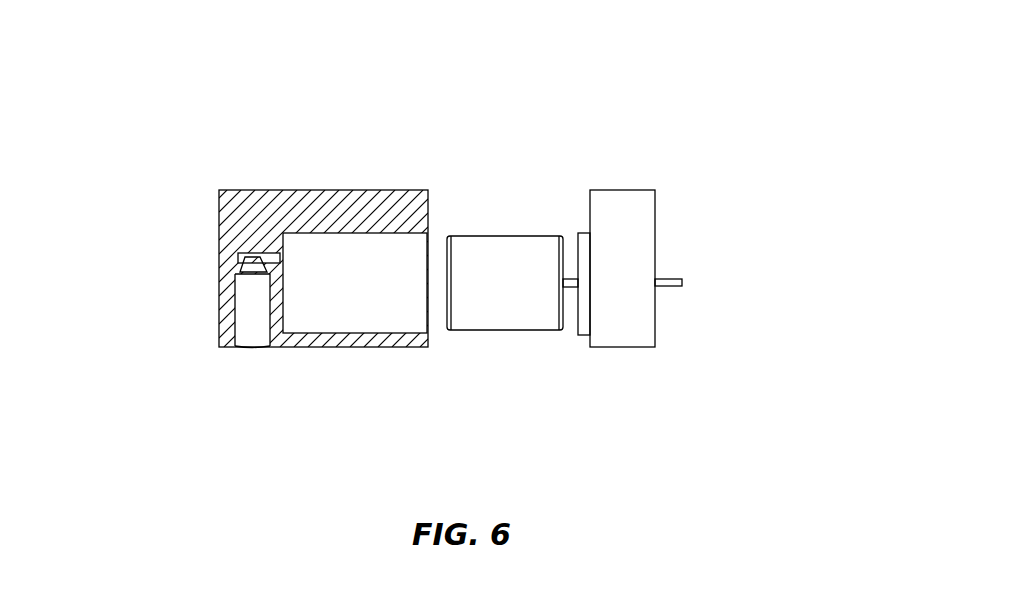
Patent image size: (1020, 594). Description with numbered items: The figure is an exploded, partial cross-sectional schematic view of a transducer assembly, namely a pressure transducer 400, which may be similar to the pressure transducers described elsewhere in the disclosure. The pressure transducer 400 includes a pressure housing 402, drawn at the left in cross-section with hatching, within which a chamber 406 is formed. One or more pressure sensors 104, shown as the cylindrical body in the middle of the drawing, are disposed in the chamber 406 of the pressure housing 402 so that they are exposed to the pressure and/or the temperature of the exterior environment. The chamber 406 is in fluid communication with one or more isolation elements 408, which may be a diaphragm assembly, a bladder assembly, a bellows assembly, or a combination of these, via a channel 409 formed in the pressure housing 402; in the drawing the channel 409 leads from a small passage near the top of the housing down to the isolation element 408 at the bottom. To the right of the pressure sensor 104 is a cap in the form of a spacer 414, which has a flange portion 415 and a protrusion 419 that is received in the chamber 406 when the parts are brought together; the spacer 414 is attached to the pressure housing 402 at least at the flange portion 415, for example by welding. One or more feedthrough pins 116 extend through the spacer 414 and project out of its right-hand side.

The pressure transducer 400 is at (231, 153).
The pressure housing 402 is at (237, 227).
The chamber 406 is at (342, 311).
The isolation element 408 is at (253, 346).
The channel 409 is at (258, 266).
The pressure sensor 104 is at (521, 273).
The protrusion 419 is at (578, 235).
The flange portion 415 is at (643, 223).
The spacer 414 is at (612, 321).
The feedthrough pin 116 is at (672, 284).